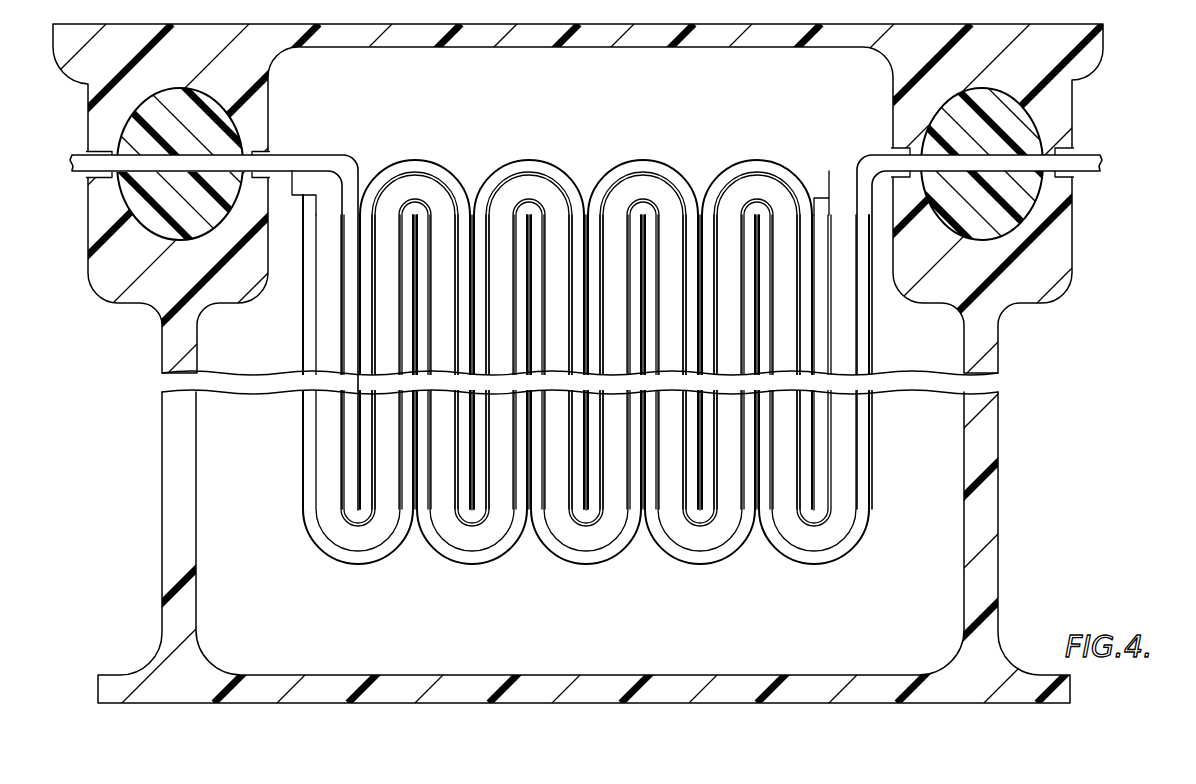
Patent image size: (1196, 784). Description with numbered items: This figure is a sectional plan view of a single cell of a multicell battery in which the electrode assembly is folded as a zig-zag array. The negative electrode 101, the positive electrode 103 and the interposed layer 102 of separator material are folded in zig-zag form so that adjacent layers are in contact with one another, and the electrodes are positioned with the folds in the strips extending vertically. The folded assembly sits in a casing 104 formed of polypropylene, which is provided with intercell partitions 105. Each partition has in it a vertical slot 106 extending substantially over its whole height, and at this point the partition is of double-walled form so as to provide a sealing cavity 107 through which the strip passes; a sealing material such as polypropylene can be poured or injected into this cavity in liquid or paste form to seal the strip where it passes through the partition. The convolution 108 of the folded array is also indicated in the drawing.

The negative electrode 101 is at (313, 528).
The interposed layer of separator material 102 is at (355, 538).
The positive electrode 103 is at (367, 512).
The casing 104 is at (828, 683).
The intercell partition 105 is at (982, 520).
The vertical slot 106 is at (892, 152).
The sealing cavity 107 is at (950, 120).
The bellows convolution 108 is at (473, 185).